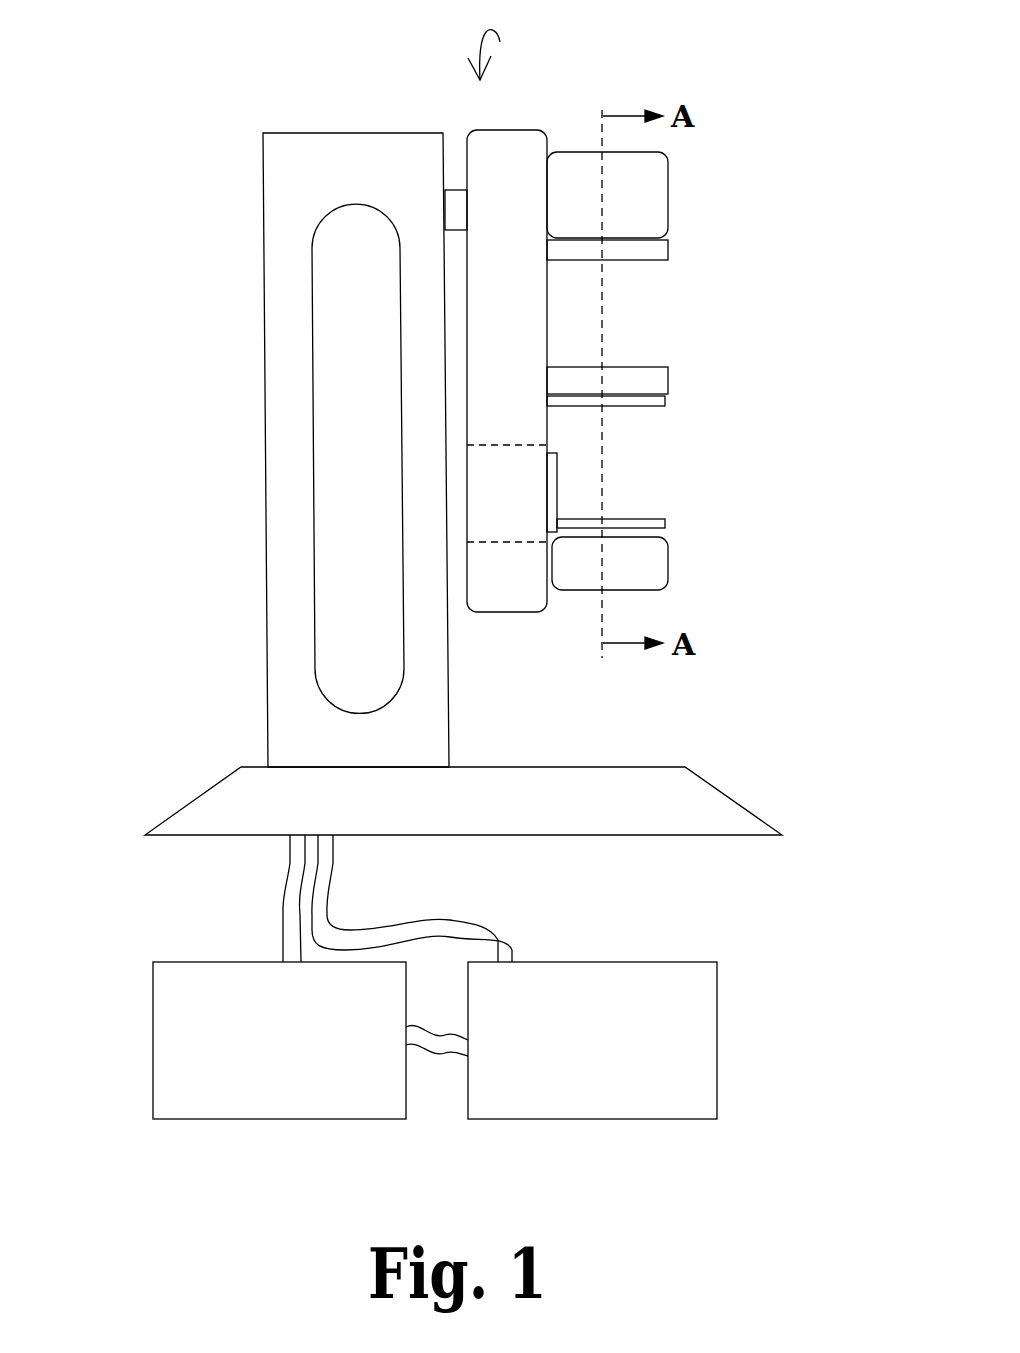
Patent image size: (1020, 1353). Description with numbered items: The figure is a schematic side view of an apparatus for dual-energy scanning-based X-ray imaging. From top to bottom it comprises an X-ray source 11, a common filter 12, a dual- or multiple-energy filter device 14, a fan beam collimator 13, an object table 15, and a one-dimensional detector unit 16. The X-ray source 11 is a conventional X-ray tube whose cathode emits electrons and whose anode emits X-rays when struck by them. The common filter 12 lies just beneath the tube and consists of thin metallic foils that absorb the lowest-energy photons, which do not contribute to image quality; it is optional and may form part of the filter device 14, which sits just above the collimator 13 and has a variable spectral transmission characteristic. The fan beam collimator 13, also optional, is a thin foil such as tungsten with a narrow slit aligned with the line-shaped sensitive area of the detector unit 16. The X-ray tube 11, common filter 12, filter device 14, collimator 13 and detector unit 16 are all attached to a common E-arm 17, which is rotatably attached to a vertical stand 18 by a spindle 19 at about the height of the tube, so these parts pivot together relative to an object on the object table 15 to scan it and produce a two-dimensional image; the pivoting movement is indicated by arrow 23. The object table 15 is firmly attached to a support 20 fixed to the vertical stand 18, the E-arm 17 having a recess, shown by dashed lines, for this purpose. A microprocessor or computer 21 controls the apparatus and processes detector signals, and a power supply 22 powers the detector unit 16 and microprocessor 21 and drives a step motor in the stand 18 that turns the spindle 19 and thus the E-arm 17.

The X-ray source 11 is at (668, 185).
The common filter 12 is at (668, 249).
The fan beam collimator 13 is at (665, 403).
The dual-energy filter device 14 is at (668, 372).
The object table 15 is at (665, 523).
The one-dimensional detector unit 16 is at (668, 553).
The E-arm 17 is at (510, 130).
The vertical stand 18 is at (449, 698).
The spindle 19 is at (457, 190).
The support 20 is at (557, 486).
The microprocessor or computer 21 is at (713, 983).
The power supply 22 is at (153, 990).
The arrow 23 is at (503, 80).